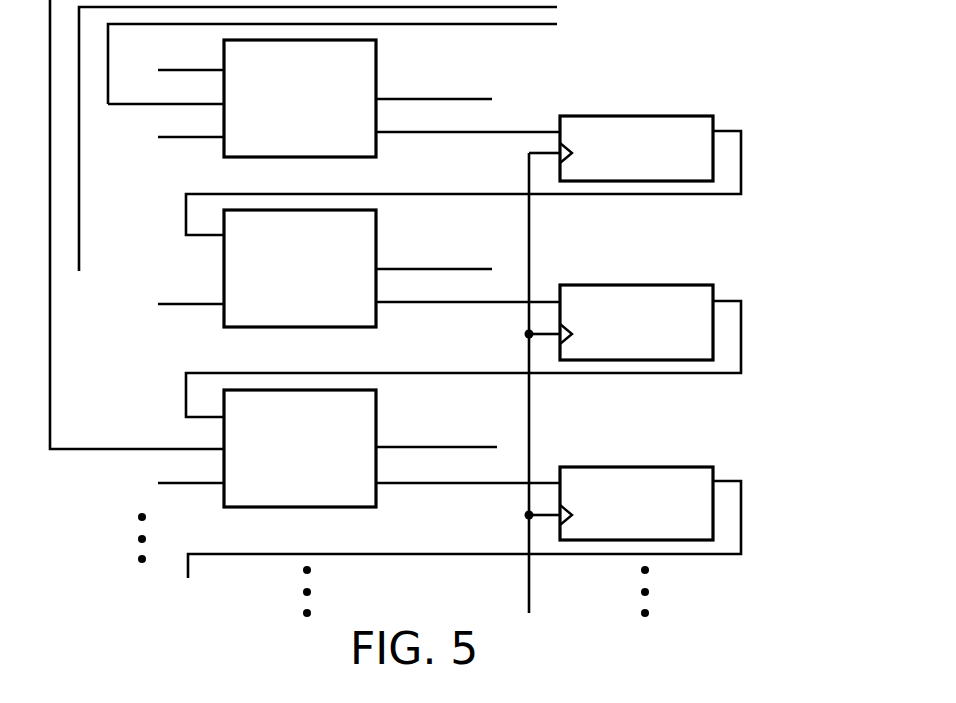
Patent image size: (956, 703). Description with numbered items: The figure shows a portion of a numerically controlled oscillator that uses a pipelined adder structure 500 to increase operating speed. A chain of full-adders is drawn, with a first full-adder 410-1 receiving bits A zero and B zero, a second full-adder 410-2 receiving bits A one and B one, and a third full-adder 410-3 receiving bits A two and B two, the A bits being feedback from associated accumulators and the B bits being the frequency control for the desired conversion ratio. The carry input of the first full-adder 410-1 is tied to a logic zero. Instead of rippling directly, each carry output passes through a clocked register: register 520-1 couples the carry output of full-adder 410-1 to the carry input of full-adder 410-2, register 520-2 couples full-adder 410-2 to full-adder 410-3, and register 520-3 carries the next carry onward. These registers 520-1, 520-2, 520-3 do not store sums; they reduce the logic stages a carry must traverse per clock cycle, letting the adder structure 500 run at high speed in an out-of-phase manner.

The pipelined adder structure 500 is at (455, 308).
The first full-adder 410-1 is at (361, 76).
The second full-adder 410-2 is at (361, 246).
The third full-adder 410-3 is at (361, 426).
The register 520-1 is at (671, 163).
The register 520-2 is at (671, 334).
The register 520-3 is at (671, 515).